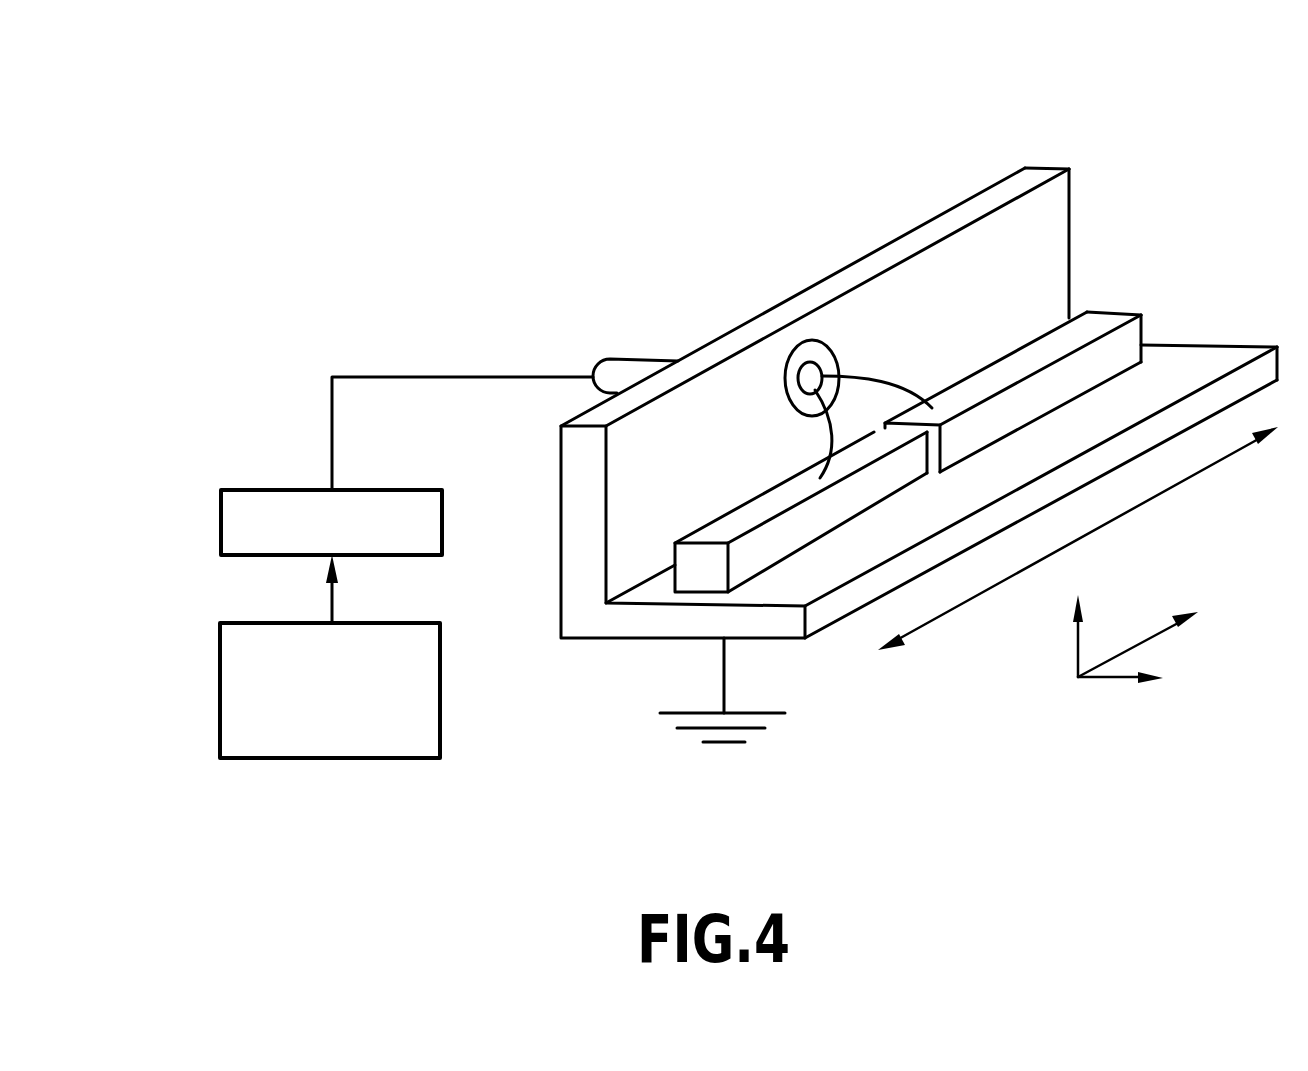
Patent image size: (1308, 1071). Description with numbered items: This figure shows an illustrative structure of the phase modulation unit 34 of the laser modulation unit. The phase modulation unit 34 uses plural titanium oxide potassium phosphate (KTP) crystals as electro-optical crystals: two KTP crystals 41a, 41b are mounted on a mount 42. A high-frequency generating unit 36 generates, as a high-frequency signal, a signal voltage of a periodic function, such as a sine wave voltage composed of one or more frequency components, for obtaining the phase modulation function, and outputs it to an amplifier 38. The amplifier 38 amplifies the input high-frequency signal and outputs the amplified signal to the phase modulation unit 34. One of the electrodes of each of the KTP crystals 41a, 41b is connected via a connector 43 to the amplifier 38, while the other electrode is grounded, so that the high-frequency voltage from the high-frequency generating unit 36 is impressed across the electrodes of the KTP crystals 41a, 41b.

The phase modulation unit 34 is at (686, 182).
The high-frequency generating unit 36 is at (382, 623).
The amplifier 38 is at (398, 490).
The KTP crystal 41a is at (767, 500).
The KTP crystal 41b is at (1042, 343).
The mount 42 is at (827, 575).
The connector 43 is at (803, 377).